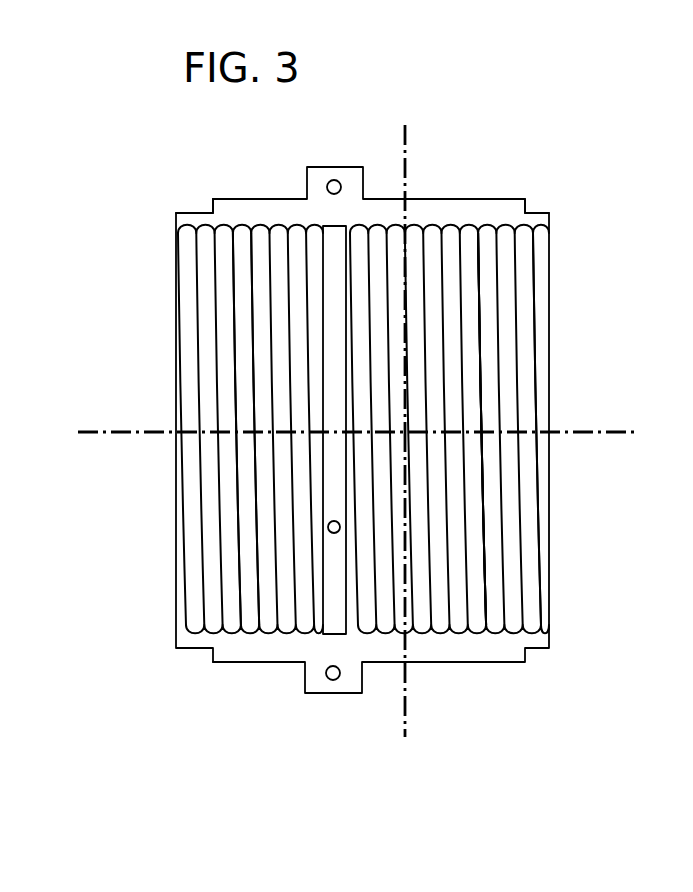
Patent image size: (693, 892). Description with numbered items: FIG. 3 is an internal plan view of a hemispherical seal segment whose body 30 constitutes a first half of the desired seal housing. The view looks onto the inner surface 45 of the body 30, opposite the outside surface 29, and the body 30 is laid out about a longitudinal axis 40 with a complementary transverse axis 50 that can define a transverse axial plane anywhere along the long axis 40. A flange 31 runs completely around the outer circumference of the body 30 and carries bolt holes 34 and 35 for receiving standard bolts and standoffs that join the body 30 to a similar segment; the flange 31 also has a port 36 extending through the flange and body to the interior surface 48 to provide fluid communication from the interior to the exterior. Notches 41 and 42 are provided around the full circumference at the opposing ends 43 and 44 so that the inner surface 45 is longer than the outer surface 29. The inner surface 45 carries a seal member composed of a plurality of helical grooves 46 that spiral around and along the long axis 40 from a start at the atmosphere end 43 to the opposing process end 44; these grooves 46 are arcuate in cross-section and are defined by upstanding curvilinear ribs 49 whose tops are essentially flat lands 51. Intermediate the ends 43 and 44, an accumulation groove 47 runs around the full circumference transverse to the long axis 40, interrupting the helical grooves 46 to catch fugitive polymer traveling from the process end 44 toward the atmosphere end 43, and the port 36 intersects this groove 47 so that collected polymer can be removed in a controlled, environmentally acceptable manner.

The outside surface 29 is at (248, 200).
The body 30 is at (432, 170).
The flange 31 is at (363, 186).
The bolt hole 34 is at (334, 180).
The bolt hole 35 is at (333, 682).
The port 36 is at (327, 528).
The longitudinal axis 40 is at (618, 440).
The notch 41 is at (198, 213).
The notch 42 is at (533, 213).
The end 43 is at (138, 235).
The end 44 is at (572, 307).
The inner surface 45 is at (260, 232).
The helical grooves 46 is at (487, 347).
The accumulation groove 47 is at (332, 271).
The interior surface 48 is at (246, 382).
The ribs 49 is at (480, 378).
The transverse axis 50 is at (400, 708).
The lands 51 is at (480, 468).